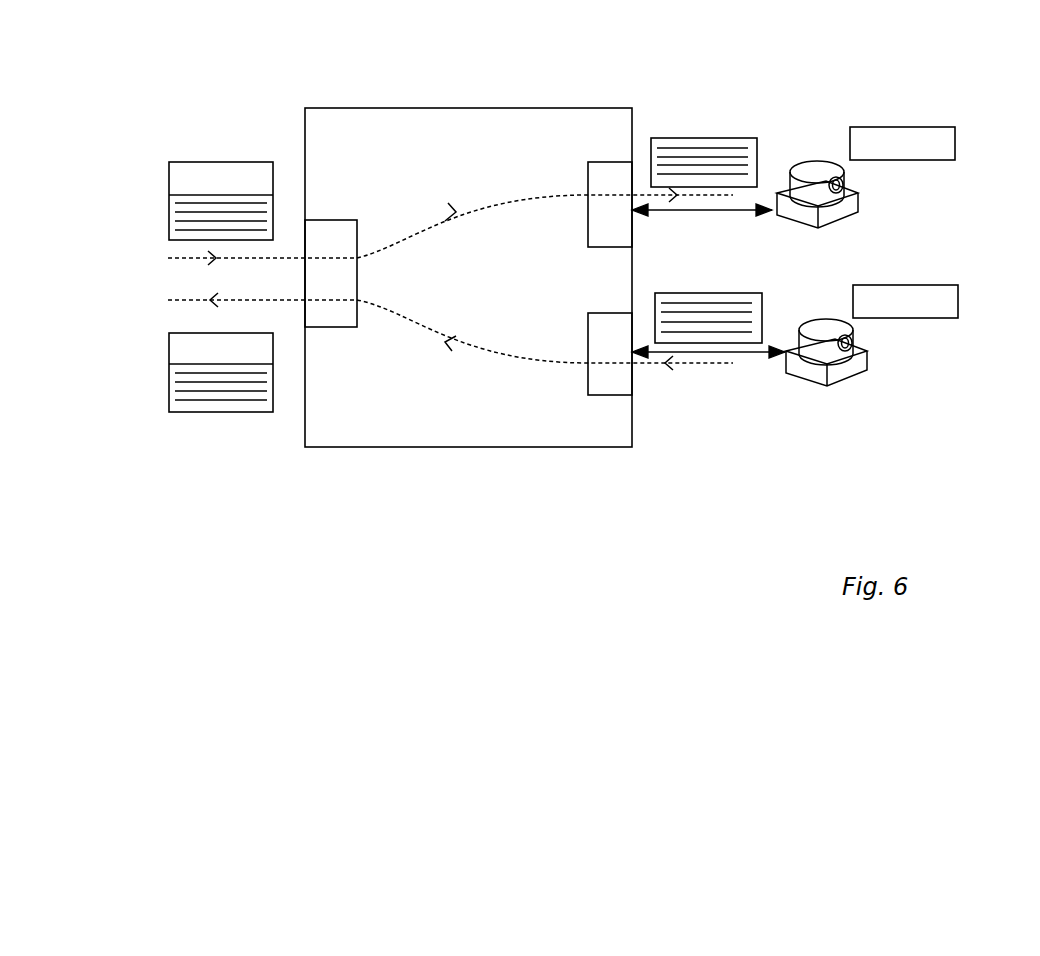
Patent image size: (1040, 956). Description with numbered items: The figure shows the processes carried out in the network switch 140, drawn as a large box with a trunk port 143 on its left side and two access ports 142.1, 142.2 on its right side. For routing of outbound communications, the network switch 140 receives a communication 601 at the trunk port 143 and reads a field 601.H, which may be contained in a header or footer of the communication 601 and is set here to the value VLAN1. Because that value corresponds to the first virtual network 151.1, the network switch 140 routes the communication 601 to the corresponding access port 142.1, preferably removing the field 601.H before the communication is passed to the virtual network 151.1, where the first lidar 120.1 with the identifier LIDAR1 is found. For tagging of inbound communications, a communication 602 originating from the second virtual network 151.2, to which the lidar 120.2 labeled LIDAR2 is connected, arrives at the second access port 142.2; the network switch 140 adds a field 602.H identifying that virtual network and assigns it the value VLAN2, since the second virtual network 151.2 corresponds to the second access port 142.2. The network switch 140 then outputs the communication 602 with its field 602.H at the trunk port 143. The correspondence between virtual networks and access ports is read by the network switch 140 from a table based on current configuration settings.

The network switch 140 is at (460, 447).
The trunk port 143 is at (330, 220).
The first access port 142.1 is at (610, 162).
The second access port 142.2 is at (610, 395).
The communication 601 is at (273, 218).
The field 601.H is at (212, 162).
The communication 602 is at (200, 412).
The field 602.H is at (273, 350).
The first virtual network 151.1 is at (690, 210).
The second virtual network 151.2 is at (713, 352).
The first lidar 120.1 is at (845, 172).
The second lidar 120.2 is at (854, 330).